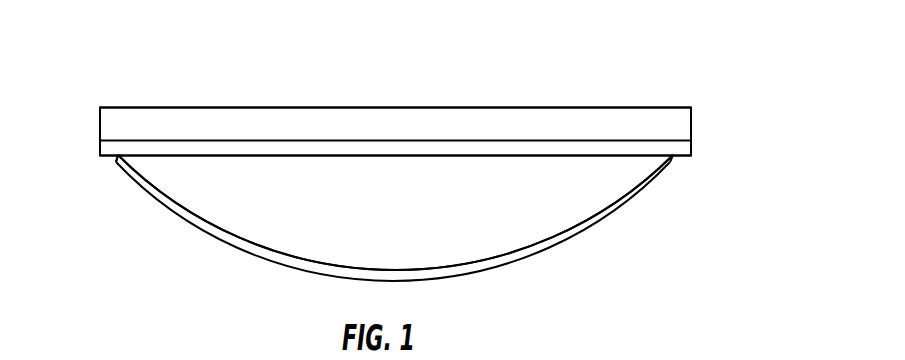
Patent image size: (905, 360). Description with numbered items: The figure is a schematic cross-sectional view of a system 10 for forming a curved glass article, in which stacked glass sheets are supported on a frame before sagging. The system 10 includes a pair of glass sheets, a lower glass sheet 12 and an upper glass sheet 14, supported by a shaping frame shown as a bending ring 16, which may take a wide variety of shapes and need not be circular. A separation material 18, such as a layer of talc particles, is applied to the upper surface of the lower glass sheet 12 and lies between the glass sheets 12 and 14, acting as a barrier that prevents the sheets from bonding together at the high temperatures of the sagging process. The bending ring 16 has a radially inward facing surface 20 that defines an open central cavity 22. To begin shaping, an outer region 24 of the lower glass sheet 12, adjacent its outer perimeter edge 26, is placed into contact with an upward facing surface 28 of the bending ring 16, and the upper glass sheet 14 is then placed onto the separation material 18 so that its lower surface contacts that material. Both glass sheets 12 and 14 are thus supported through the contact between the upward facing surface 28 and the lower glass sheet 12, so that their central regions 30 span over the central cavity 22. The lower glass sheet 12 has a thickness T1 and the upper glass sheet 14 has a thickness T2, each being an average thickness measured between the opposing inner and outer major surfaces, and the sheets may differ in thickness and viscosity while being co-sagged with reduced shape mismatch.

The system 10 is at (805, 108).
The lower glass sheet 12 is at (683, 148).
The upper glass sheet 14 is at (682, 123).
The bending ring 16 is at (622, 203).
The separation material 18 is at (685, 140).
The radially inward facing surface 20 is at (273, 245).
The central cavity 22 is at (387, 220).
The outer region 24 is at (87, 158).
The outer perimeter edge 26 is at (100, 156).
The upward facing surface 28 is at (118, 158).
The central regions 30 is at (428, 80).
The thickness of lower glass sheet T1 is at (383, 143).
The thickness of upper glass sheet T2 is at (180, 136).